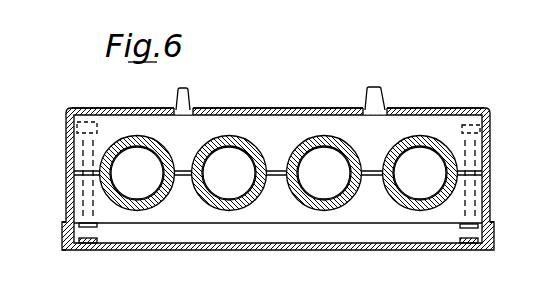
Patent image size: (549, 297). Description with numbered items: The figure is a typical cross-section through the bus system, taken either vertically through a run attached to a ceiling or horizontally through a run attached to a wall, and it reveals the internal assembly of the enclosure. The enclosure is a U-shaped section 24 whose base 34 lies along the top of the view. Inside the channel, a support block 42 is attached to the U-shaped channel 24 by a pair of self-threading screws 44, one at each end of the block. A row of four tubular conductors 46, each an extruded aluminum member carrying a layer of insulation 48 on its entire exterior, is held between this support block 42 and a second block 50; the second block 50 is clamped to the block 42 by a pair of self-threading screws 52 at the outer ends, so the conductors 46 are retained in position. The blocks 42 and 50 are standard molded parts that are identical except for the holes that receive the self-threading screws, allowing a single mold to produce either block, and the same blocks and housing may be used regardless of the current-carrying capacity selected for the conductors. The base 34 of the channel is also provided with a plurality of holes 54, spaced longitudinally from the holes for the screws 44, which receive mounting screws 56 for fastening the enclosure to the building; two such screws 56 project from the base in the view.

The U-shaped section 24 is at (452, 110).
The base 34 is at (298, 110).
The support block 42 is at (268, 130).
The self-threading screw 44 is at (72, 125).
The conductor 46 is at (133, 210).
The layer of insulation 48 is at (312, 210).
The second block 50 is at (270, 222).
The self-threading screw 52 is at (78, 228).
The hole 54 is at (170, 110).
The screw 56 is at (191, 96).